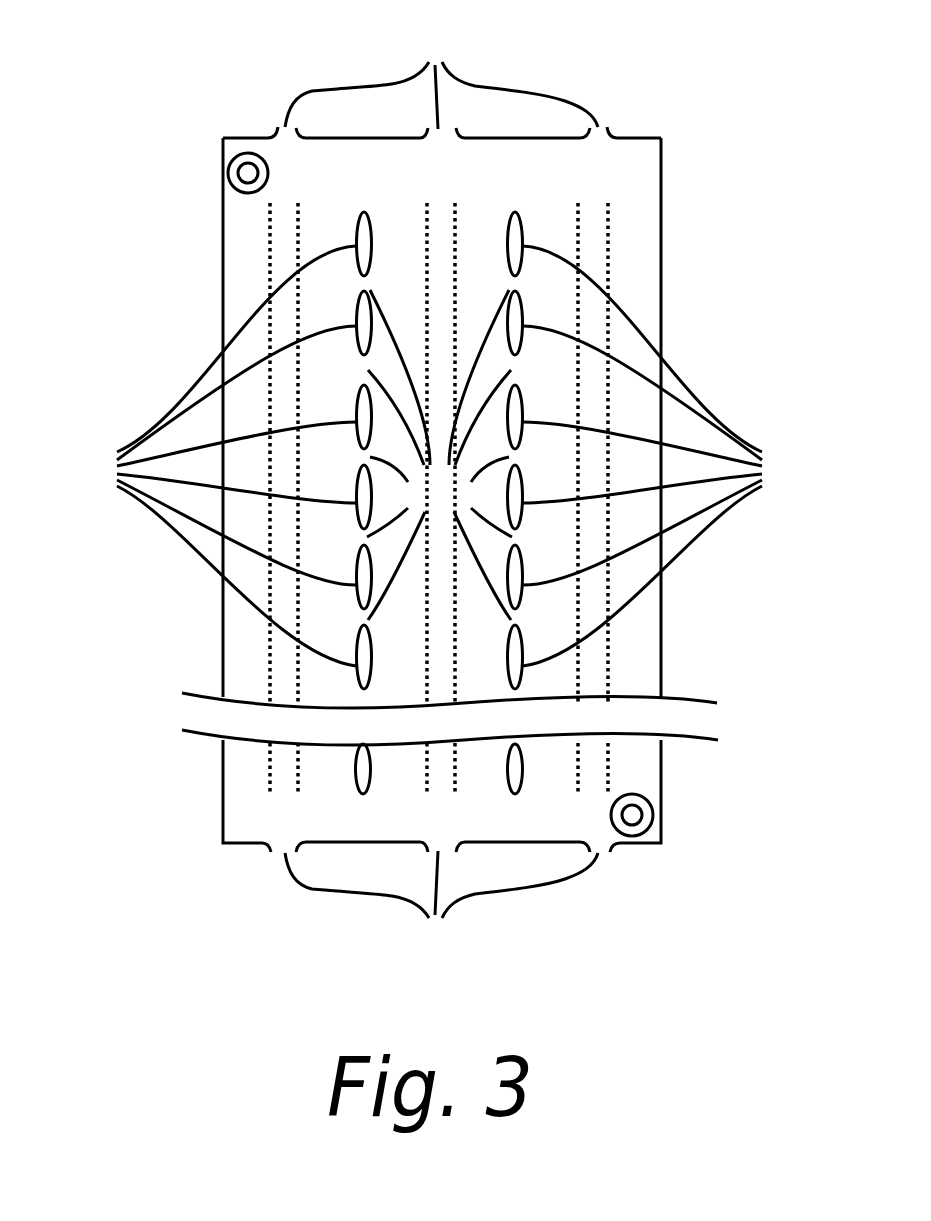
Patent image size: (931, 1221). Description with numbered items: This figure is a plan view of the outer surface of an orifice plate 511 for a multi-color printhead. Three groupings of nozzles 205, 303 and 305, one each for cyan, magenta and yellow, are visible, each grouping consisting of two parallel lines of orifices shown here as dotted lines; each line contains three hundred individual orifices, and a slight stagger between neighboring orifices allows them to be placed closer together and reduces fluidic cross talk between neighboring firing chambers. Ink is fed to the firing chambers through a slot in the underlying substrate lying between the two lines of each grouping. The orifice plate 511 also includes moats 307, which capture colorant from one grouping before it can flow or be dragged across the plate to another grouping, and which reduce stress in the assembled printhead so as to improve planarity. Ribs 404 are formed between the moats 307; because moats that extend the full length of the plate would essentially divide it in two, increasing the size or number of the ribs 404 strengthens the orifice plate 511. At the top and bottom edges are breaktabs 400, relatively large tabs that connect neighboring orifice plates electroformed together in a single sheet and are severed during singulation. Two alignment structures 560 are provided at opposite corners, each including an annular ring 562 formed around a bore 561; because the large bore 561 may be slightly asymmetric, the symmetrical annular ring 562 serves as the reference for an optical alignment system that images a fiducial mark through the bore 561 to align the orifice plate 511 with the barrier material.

The grouping of nozzles 205 is at (608, 208).
The grouping of nozzles 303 is at (455, 208).
The grouping of nozzles 305 is at (300, 208).
The moats 307 is at (440, 456).
The breaktabs 400 is at (441, 490).
The ribs 404 is at (439, 455).
The orifice plate 511 is at (662, 175).
The alignment structure 560 is at (222, 212).
The bore 561 is at (227, 173).
The annular ring 562 is at (243, 154).